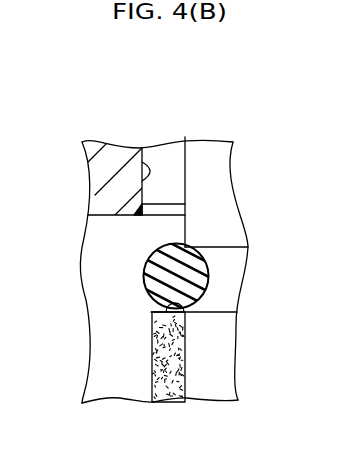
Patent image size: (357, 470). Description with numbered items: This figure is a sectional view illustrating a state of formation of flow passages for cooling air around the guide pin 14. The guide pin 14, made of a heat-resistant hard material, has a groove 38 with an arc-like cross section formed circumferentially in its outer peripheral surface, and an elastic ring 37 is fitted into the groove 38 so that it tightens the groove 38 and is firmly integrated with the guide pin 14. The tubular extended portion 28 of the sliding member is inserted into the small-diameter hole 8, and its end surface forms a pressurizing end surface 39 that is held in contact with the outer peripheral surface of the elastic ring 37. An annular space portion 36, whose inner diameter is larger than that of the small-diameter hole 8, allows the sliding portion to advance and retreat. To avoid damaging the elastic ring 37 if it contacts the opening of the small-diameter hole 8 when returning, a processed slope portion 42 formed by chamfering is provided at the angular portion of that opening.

The guide pin 14 is at (185, 162).
The small-diameter hole 8 is at (142, 180).
The processed slope portion 42 is at (146, 216).
The elastic ring 37 is at (209, 260).
The groove 38 is at (225, 295).
The pressurizing end surface 39 is at (187, 317).
The space portion 36 is at (103, 352).
The extended portion 28 is at (185, 373).